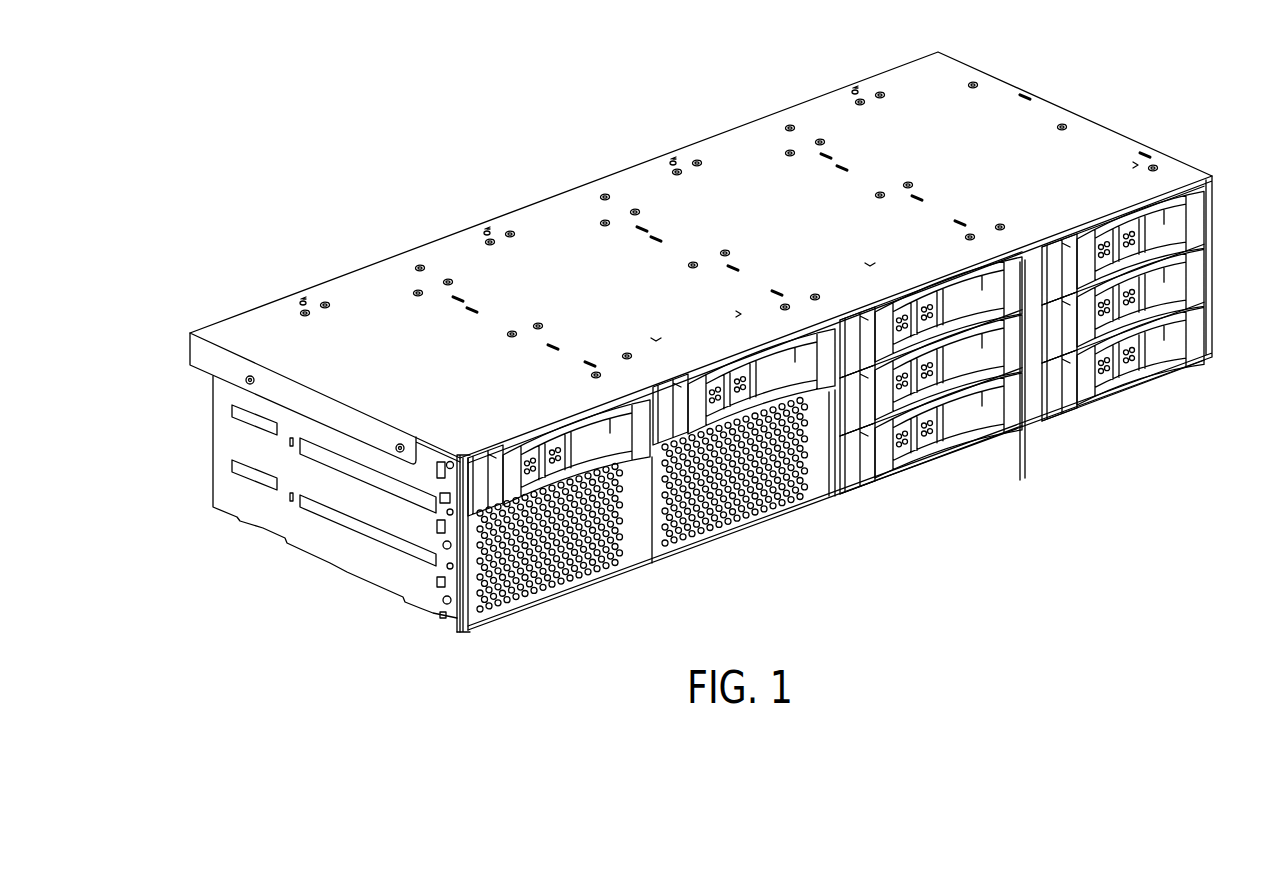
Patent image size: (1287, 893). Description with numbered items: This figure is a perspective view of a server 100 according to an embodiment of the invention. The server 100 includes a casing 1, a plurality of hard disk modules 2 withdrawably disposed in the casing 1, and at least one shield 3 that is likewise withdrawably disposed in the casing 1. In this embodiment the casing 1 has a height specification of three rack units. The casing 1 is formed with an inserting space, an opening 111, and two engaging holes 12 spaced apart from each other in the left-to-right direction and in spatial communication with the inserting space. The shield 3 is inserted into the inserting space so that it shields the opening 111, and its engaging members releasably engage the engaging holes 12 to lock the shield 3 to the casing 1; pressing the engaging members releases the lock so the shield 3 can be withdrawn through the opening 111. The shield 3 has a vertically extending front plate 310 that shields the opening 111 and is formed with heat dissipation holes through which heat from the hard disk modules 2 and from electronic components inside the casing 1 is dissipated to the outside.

The server 100 is at (335, 186).
The casing 1 is at (316, 567).
The engaging holes 12 is at (437, 528).
The opening 111 is at (465, 633).
The hard disk modules 2 is at (503, 452).
The shield 3 is at (666, 511).
The front plate 310 is at (640, 523).